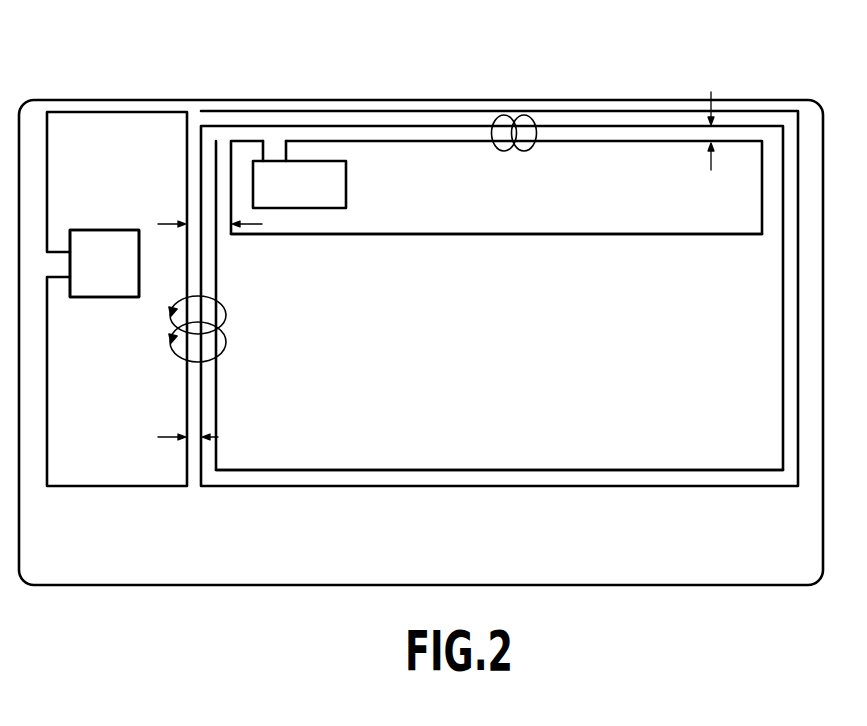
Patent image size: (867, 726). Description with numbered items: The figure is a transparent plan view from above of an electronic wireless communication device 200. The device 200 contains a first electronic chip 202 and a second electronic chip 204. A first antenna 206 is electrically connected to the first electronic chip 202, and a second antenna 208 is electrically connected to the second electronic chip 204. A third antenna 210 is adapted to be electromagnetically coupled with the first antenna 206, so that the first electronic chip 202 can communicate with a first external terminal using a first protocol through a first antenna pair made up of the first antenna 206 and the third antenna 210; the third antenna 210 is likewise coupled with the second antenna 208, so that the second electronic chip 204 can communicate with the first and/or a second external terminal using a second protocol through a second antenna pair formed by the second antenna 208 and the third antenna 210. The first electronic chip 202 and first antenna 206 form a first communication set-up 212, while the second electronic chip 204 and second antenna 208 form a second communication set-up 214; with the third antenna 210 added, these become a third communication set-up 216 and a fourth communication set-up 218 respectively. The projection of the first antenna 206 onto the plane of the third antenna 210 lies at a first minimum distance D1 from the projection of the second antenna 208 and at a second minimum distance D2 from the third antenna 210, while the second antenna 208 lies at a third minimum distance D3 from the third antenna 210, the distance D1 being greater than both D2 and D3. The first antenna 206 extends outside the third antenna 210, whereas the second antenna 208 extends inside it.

The electronic wireless communication device 200 is at (273, 543).
The first electronic chip 202 is at (125, 277).
The second electronic chip 204 is at (319, 200).
The first antenna 206 is at (48, 408).
The second antenna 208 is at (468, 236).
The third antenna 210 is at (420, 468).
The first communication set-up 212 is at (105, 310).
The second communication set-up 214 is at (555, 243).
The third communication set-up 216 is at (125, 250).
The fourth communication set-up 218 is at (499, 250).
The first minimum distance D1 is at (257, 224).
The second minimum distance D2 is at (218, 437).
The third minimum distance D3 is at (710, 165).